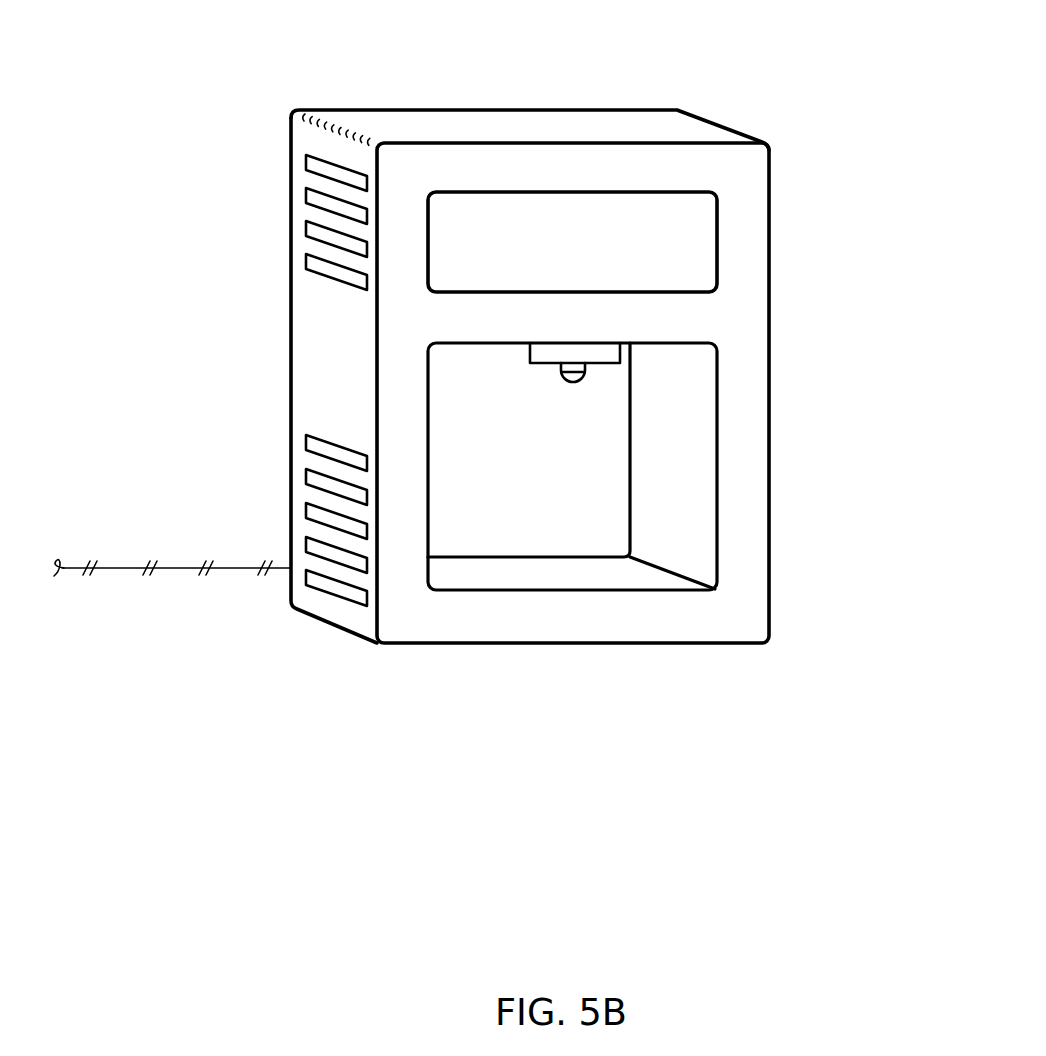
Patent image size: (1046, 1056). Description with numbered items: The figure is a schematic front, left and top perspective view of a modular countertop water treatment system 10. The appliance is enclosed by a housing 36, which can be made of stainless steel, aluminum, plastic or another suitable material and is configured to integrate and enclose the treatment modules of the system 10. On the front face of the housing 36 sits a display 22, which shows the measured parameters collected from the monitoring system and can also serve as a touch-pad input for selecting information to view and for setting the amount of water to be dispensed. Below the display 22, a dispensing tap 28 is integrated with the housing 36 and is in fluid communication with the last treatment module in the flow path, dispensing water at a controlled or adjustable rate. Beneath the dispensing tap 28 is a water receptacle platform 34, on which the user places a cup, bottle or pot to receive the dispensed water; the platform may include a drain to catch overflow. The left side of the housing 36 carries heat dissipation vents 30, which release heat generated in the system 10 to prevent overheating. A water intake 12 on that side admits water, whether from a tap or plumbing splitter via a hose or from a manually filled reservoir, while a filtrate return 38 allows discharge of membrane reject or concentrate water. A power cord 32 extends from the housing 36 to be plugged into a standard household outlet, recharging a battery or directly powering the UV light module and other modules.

The countertop water treatment system 10 is at (662, 63).
The water intake 12 is at (286, 339).
The display 22 is at (681, 229).
The dispensing tap 28 is at (594, 378).
The heat dissipation vents 30 is at (300, 163).
The power cord 32 is at (172, 598).
The water receptacle platform 34 is at (590, 590).
The housing 36 is at (776, 148).
The filtrate return 38 is at (291, 457).